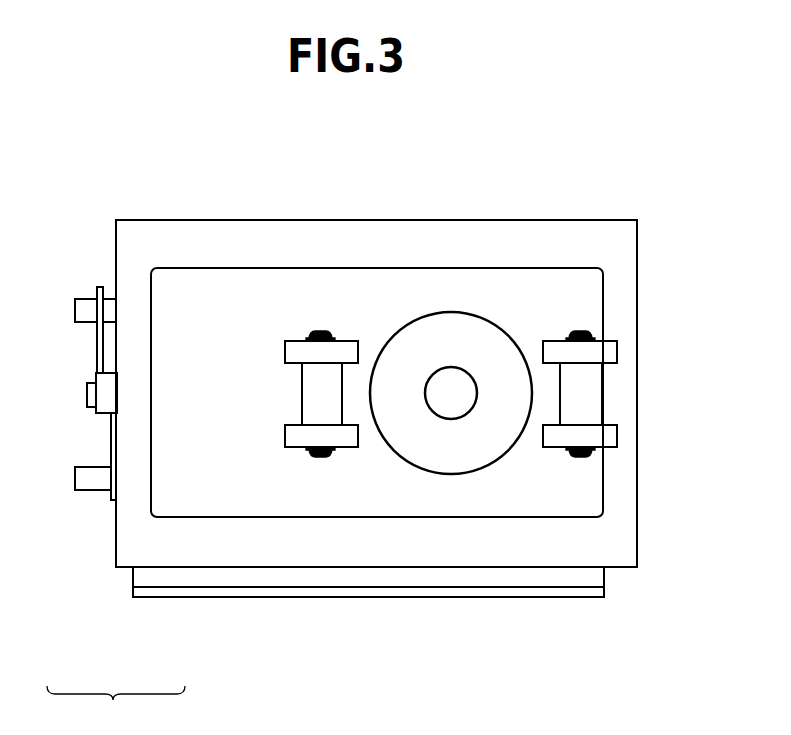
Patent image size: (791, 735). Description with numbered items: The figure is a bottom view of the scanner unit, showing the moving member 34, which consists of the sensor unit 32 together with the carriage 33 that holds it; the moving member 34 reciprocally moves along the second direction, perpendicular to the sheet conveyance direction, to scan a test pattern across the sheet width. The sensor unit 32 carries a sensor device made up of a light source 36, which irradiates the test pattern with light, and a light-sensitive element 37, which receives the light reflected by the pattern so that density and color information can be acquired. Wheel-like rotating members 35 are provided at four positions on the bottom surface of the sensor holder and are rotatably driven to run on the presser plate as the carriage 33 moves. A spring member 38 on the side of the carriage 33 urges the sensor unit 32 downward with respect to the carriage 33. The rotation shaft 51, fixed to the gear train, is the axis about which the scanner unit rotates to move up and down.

The sensor unit 32 is at (182, 465).
The carriage 33 is at (128, 545).
The moving member 34 is at (116, 707).
The rotating members 35 is at (300, 350).
The light source 36 is at (451, 450).
The light-sensitive element 37 is at (452, 378).
The spring member 38 is at (103, 393).
The rotation shaft 51 is at (535, 594).